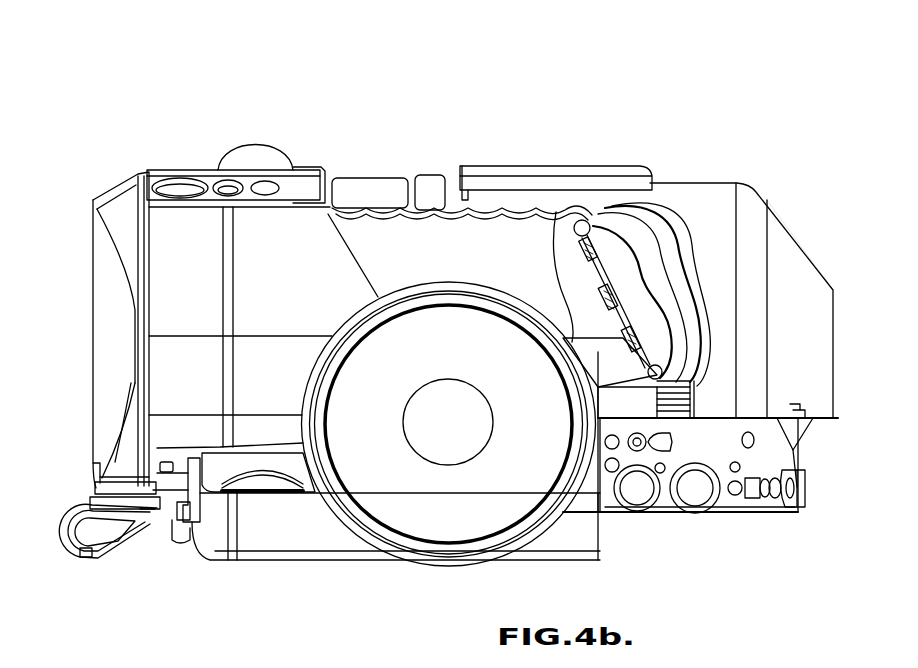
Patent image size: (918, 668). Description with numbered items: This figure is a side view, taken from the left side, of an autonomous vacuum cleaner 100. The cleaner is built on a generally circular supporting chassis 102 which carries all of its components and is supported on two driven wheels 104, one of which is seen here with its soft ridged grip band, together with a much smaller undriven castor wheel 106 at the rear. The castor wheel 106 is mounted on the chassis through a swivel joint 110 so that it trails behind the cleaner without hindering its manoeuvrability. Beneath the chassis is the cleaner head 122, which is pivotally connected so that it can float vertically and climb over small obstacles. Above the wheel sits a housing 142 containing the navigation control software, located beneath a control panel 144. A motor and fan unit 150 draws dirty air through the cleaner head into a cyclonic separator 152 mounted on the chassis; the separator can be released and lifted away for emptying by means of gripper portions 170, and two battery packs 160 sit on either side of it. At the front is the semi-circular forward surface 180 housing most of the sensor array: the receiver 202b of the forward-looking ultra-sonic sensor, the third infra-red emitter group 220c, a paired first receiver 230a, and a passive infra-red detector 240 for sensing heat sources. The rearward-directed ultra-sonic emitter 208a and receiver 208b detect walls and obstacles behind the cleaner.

The vacuum cleaner 100 is at (752, 166).
The supporting chassis 102 is at (770, 507).
The driven wheel 104 is at (458, 525).
The castor wheel 106 is at (67, 557).
The swivel joint 110 is at (100, 503).
The cleaner head 122 is at (283, 533).
The housing 142 is at (192, 293).
The control panel 144 is at (198, 168).
The motor and fan unit 150 is at (302, 273).
The cyclonic separator 152 is at (793, 258).
The battery pack 160 is at (457, 242).
The gripper portion 170 is at (567, 172).
The forward surface 180 is at (770, 453).
The receiver 202b is at (790, 490).
The emitter 208a is at (636, 497).
The receiver 208b is at (697, 490).
The third emitter group 220c is at (742, 492).
The first receiver 230a is at (593, 483).
The passive infra-red detector 240 is at (741, 440).